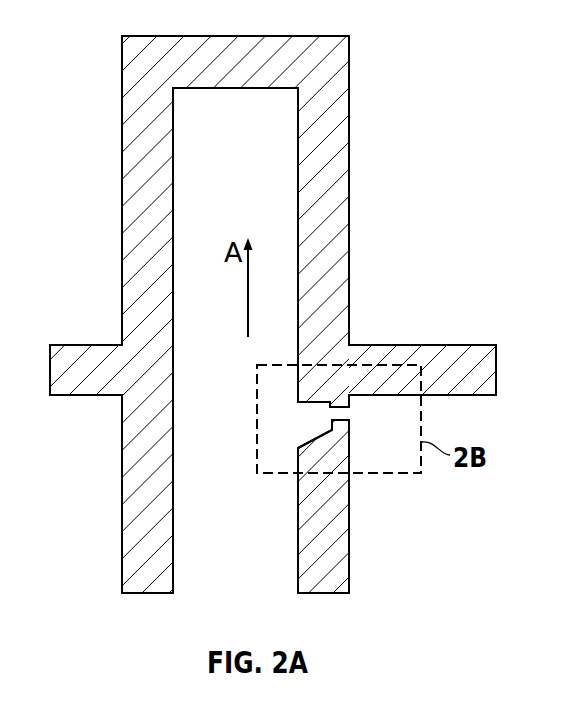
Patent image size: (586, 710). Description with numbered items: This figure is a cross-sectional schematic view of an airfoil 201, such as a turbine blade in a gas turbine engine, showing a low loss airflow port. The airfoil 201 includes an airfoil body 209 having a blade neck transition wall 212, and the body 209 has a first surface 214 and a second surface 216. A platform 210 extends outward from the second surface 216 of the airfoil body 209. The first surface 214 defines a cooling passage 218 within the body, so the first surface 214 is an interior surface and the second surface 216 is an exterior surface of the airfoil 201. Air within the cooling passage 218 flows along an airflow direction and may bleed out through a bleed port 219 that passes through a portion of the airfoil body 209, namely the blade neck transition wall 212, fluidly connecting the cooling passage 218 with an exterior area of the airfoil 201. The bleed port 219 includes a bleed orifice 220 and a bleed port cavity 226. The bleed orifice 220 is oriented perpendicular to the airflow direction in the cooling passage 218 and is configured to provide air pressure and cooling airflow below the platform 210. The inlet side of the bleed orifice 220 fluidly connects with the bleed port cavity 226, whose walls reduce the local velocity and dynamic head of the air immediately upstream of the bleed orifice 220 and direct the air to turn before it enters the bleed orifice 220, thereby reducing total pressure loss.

The airfoil 201 is at (100, 44).
The airfoil body 209 is at (339, 108).
The platform 210 is at (465, 367).
The blade neck transition wall 212 is at (337, 450).
The first surface 214 is at (298, 215).
The second surface 216 is at (349, 222).
The cooling passage 218 is at (284, 161).
The bleed port 219 is at (318, 395).
The bleed orifice 220 is at (358, 410).
The bleed port cavity 226 is at (297, 437).